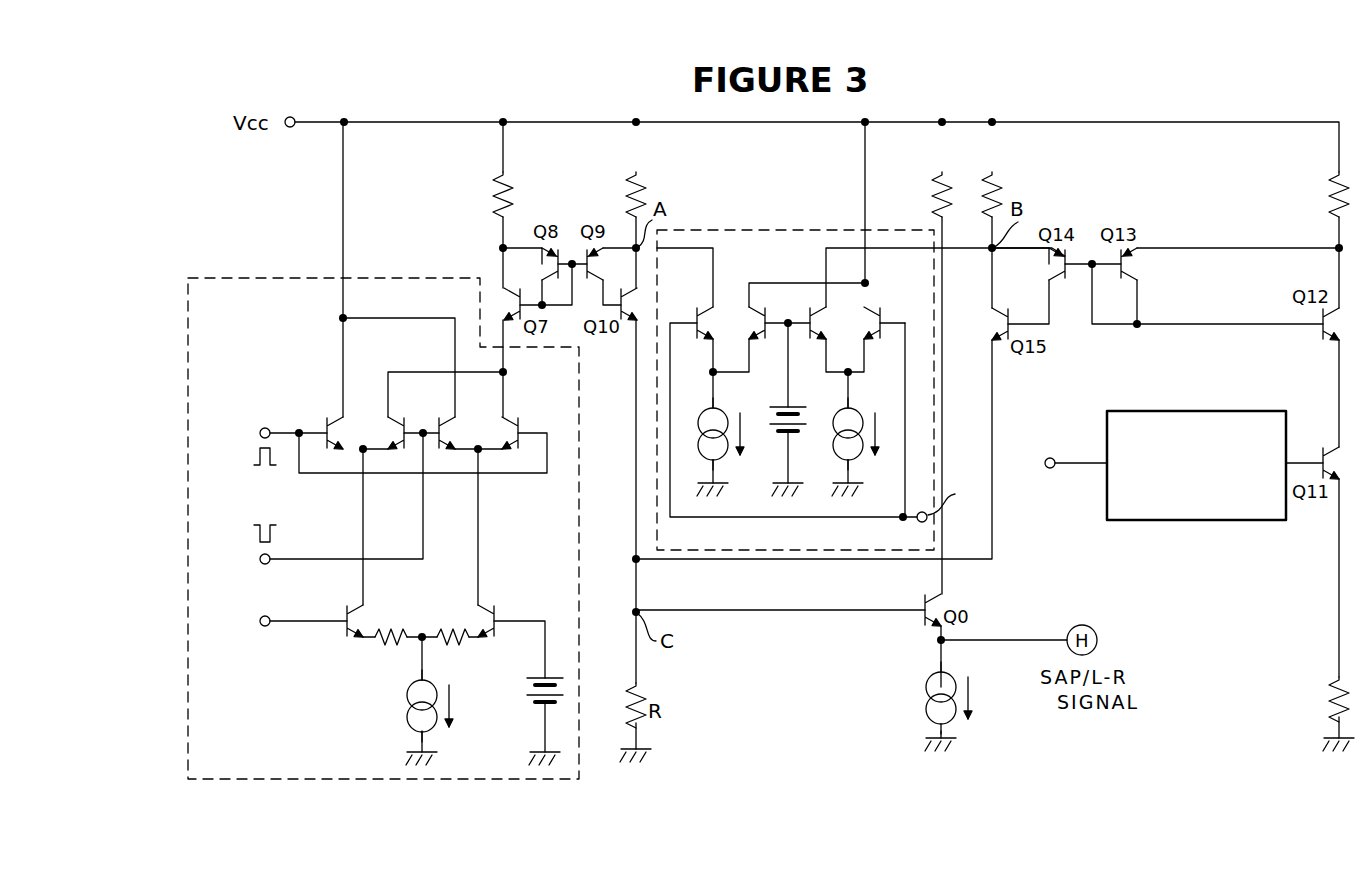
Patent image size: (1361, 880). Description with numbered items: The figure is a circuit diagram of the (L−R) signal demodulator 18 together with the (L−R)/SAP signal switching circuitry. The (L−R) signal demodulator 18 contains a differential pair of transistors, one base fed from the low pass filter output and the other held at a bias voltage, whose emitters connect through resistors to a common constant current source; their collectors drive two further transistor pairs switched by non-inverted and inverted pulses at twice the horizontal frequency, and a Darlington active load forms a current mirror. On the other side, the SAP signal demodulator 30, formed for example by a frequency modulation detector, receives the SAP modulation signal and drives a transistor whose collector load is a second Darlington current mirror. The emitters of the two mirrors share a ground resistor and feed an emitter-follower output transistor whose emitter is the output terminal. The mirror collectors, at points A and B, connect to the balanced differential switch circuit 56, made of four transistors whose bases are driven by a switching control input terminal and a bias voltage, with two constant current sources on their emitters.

The switch circuit 56 is at (772, 230).
The (L−R) signal demodulator 18 is at (516, 780).
The SAP signal demodulator 30 is at (1229, 521).